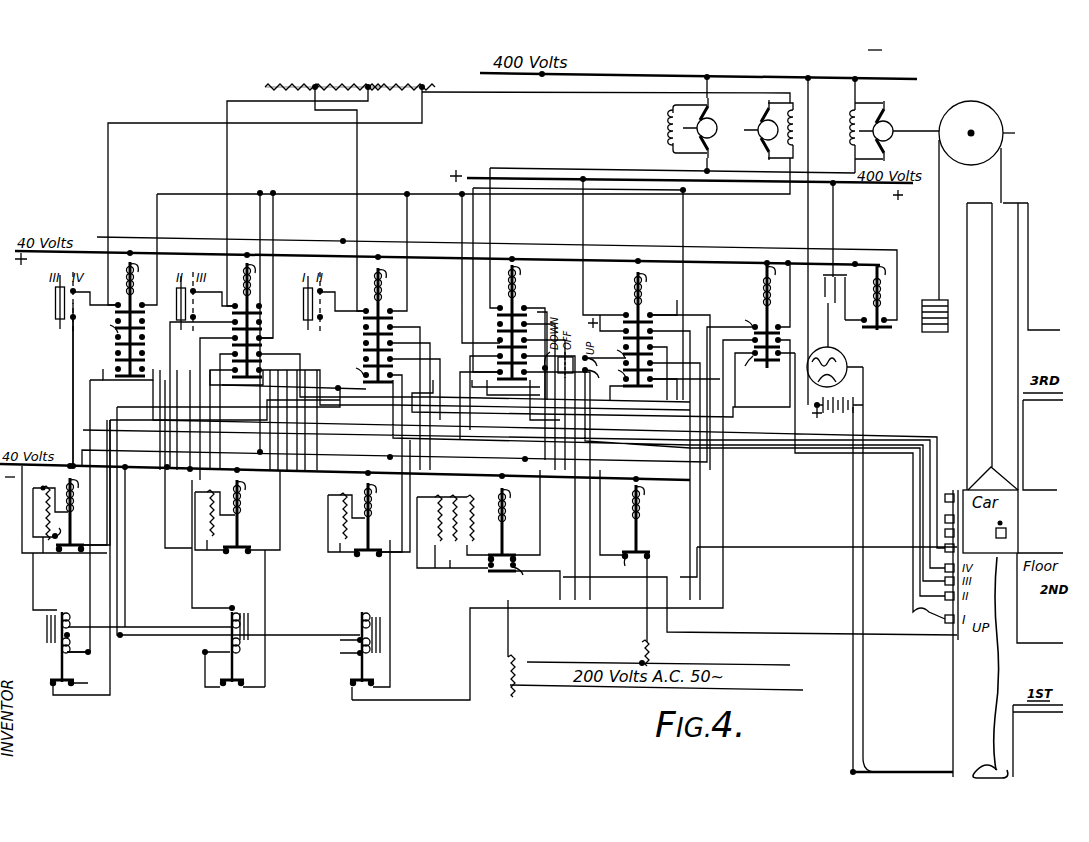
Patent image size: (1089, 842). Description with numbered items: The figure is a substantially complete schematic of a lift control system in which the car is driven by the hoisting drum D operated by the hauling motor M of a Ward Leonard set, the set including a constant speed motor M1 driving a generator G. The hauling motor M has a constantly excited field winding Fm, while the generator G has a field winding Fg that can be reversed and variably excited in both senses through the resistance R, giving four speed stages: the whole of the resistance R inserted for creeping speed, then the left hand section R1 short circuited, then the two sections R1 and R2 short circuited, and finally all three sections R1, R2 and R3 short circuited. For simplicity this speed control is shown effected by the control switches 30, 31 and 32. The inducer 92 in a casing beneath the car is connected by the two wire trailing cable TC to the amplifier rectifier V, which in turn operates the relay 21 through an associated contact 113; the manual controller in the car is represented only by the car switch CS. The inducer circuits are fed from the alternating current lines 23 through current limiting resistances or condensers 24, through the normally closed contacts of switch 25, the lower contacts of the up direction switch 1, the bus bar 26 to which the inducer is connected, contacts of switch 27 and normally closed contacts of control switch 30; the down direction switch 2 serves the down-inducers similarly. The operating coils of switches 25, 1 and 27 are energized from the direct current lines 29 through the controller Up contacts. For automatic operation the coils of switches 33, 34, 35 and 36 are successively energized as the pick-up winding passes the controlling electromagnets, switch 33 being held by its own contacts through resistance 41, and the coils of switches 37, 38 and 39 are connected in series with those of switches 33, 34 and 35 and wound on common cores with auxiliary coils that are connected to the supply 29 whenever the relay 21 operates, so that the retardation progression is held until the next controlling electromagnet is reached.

The up direction switch 1 is at (638, 287).
The down direction switch 2 is at (517, 298).
The relay 21 is at (889, 349).
The power supply line 23 is at (742, 668).
The current limiting resistance or condenser 24 is at (512, 670).
The switch 25 is at (640, 503).
The bus bar 26 is at (945, 529).
The switch 27 is at (758, 320).
The direct current power supply 29 is at (44, 252).
The control switch 30 is at (383, 297).
The control switch 31 is at (251, 291).
The control switch 32 is at (134, 290).
The switch 33 is at (67, 488).
The switch 34 is at (230, 491).
The switch 35 is at (364, 496).
The switch 36 is at (503, 498).
The switch 37 is at (62, 612).
The switch 38 is at (235, 610).
The switch 39 is at (365, 613).
The resistance 41 is at (40, 509).
The inducer (pick-up winding) 92 is at (965, 633).
The contact 113 is at (831, 305).
The constant speed motor M1 is at (701, 124).
The generator G is at (768, 130).
The generator field winding Fg is at (805, 128).
The motor field winding Fm is at (835, 126).
The hauling motor M is at (897, 131).
The hoisting drum D is at (990, 118).
The amplifier rectifier V is at (860, 386).
The car switch CS is at (1007, 535).
The trailing cable TC is at (1000, 675).
The resistance R is at (350, 64).
The resistance section R1 is at (292, 78).
The resistance section R2 is at (348, 78).
The resistance section R3 is at (402, 78).